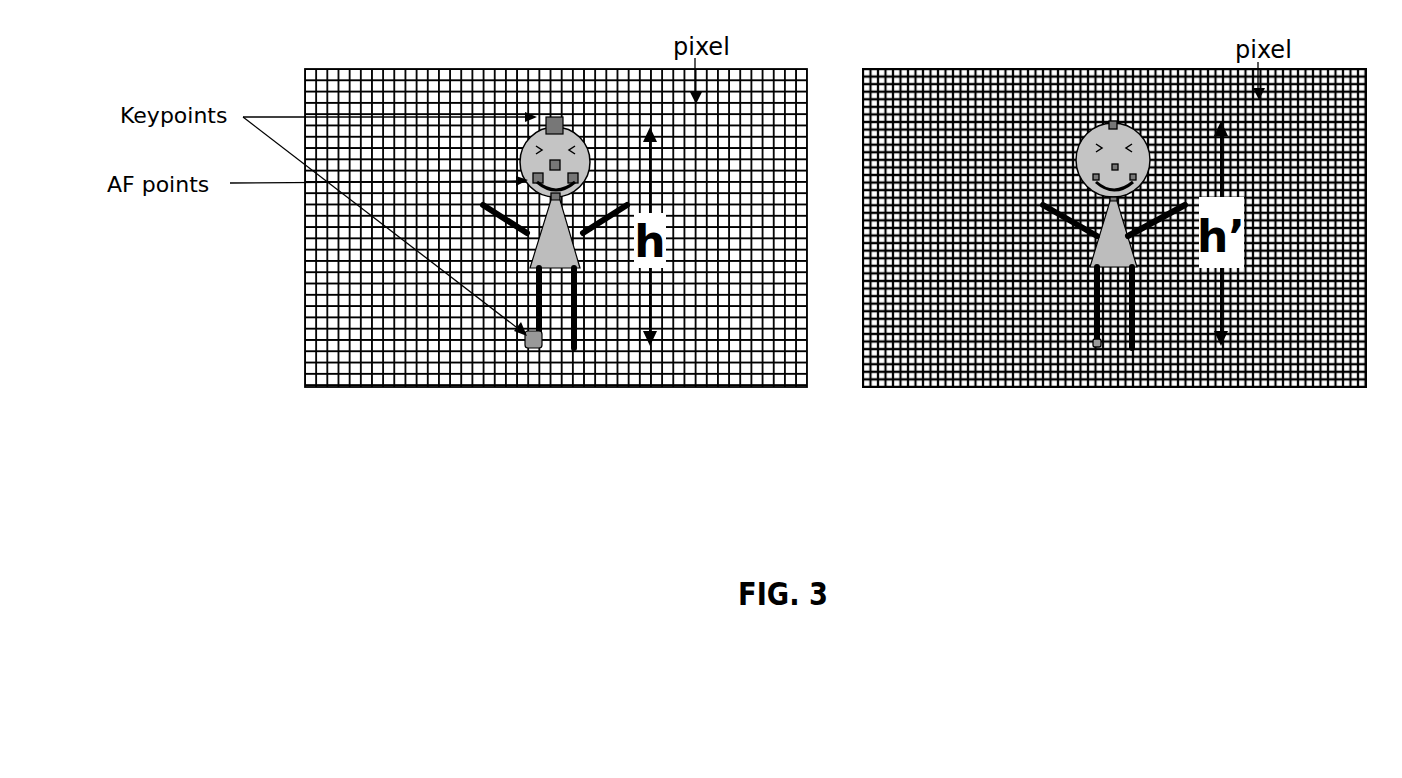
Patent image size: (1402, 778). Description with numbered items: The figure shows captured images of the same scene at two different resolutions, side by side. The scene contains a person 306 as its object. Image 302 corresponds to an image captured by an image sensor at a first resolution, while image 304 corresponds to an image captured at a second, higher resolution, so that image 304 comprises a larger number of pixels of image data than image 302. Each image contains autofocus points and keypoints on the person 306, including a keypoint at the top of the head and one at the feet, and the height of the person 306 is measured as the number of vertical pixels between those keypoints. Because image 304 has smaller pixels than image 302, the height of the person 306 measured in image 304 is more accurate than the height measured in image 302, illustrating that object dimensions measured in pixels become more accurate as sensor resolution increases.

The image 302 is at (547, 402).
The image 304 is at (1053, 406).
The person 306 is at (518, 121).